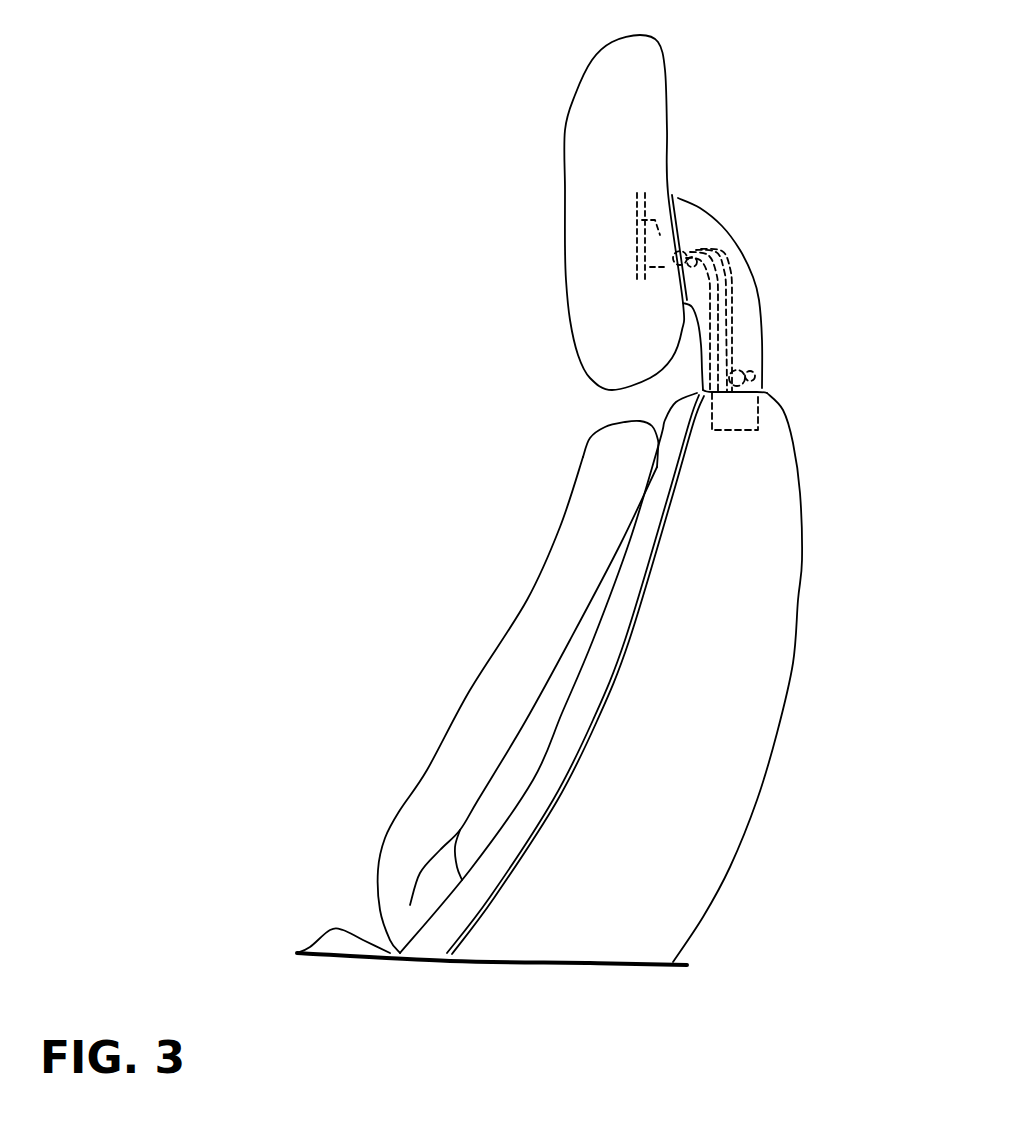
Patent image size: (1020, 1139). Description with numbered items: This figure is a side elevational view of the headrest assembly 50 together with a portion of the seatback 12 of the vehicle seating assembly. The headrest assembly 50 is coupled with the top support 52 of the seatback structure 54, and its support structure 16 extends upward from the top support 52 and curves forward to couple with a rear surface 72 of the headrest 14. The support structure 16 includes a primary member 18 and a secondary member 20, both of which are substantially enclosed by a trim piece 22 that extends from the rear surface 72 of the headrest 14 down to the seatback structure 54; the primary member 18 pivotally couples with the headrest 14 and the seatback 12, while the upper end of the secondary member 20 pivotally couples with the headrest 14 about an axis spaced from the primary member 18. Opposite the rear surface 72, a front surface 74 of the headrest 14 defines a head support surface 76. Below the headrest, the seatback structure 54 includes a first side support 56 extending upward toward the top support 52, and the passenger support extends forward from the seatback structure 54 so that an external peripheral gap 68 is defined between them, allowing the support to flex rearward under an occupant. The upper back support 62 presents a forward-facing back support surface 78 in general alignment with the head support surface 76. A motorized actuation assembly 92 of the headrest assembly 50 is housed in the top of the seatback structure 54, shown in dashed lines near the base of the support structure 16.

The seatback 12 is at (430, 710).
The headrest 14 is at (604, 142).
The support structure 16 is at (753, 277).
The primary member 18 is at (700, 357).
The secondary member 20 is at (732, 260).
The trim piece 22 is at (750, 332).
The headrest assembly 50 is at (798, 138).
The top support 52 is at (762, 400).
The seatback structure 54 is at (730, 672).
The first side support 56 is at (645, 797).
The upper back support 62 is at (542, 617).
The external peripheral gap 68 is at (553, 709).
The rear surface 72 is at (665, 167).
The front surface 74 is at (563, 197).
The head support surface 76 is at (563, 260).
The back support surface 78 is at (557, 533).
The motorized actuation assembly 92 is at (742, 433).